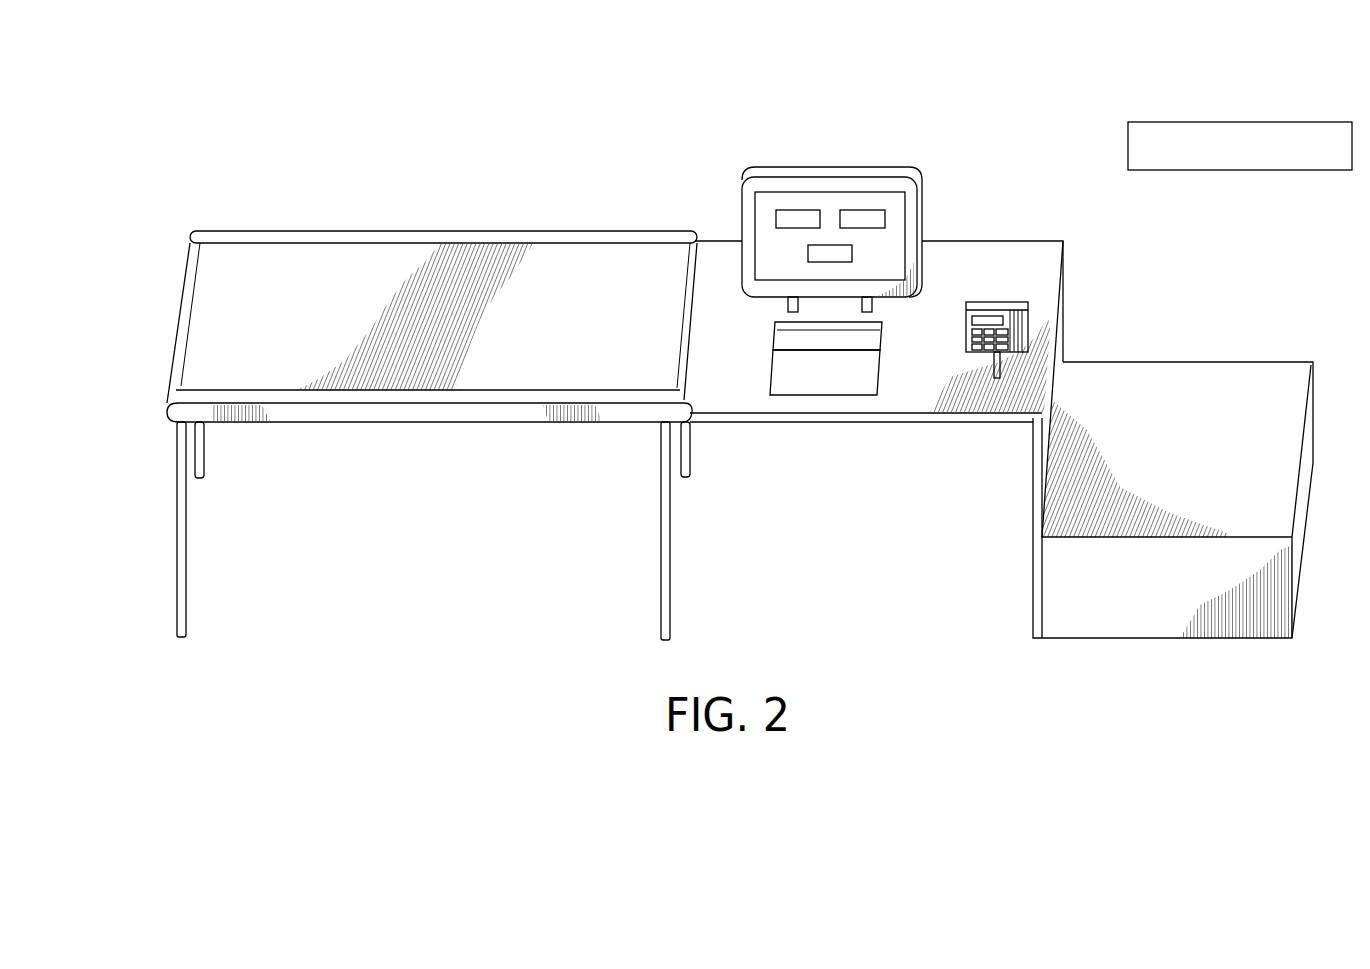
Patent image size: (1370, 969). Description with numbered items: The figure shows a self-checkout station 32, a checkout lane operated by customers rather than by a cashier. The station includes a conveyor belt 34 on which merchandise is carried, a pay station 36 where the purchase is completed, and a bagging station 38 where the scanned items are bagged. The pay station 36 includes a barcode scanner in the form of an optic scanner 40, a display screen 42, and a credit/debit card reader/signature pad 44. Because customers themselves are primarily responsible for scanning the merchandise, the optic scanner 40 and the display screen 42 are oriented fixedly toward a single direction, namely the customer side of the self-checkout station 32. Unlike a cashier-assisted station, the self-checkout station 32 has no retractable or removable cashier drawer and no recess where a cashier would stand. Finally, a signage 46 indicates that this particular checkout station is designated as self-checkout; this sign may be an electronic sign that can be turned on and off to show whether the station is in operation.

The self-checkout station 32 is at (570, 118).
The conveyor belt 34 is at (300, 268).
The pay station 36 is at (985, 241).
The bagging station 38 is at (1228, 360).
The optic scanner 40 is at (800, 396).
The display screen 42 is at (852, 195).
The credit/debit card reader/signature pad 44 is at (990, 318).
The signage 46 is at (1183, 92).